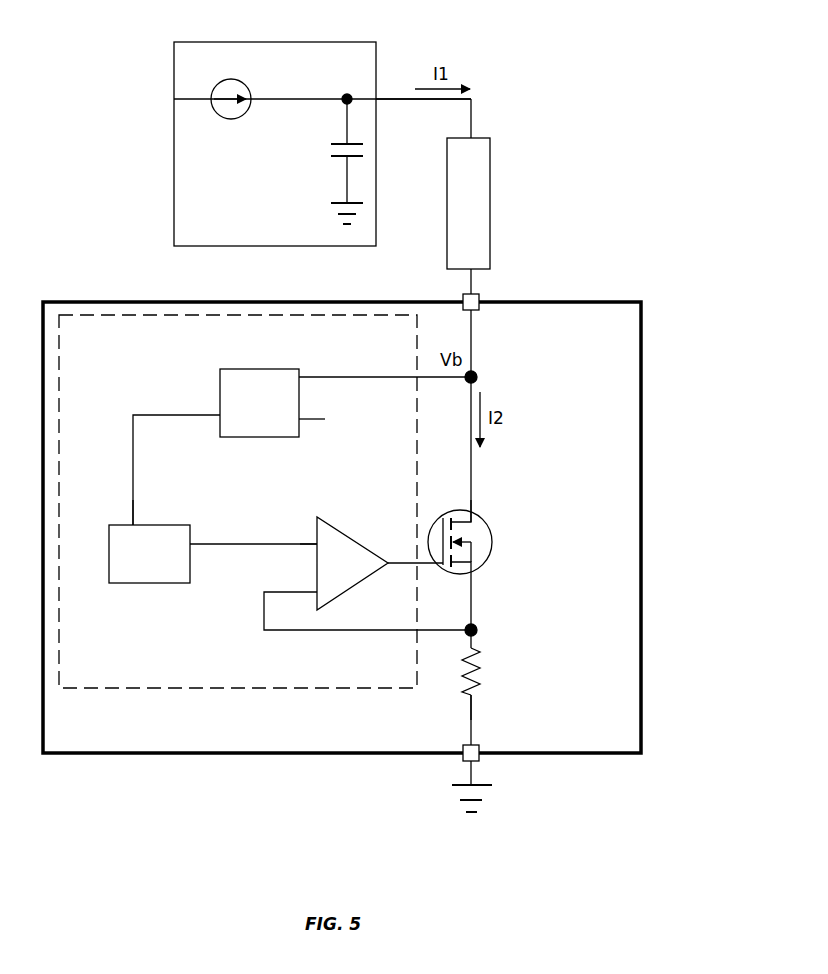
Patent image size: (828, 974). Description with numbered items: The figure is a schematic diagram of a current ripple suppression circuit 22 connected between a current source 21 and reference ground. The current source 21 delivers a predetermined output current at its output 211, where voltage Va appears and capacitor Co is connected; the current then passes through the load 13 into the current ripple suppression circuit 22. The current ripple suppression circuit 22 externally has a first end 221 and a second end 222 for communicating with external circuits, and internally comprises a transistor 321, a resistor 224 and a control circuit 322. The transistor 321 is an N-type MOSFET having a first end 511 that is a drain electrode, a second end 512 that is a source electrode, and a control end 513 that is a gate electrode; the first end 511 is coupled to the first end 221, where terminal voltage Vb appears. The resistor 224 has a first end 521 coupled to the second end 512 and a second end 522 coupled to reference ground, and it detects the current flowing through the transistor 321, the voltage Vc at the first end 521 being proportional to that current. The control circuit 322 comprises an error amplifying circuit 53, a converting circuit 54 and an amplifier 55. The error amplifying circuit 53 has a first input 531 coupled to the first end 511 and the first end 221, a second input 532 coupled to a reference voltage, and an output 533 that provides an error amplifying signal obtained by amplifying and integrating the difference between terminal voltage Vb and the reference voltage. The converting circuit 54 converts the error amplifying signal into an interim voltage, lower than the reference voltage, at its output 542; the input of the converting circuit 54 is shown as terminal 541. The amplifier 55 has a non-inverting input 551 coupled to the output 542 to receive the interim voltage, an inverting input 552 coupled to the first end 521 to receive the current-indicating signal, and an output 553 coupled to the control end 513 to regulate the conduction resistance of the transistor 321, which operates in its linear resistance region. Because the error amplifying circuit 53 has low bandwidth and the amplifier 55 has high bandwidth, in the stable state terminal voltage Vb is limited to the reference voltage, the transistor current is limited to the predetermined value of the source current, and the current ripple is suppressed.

The current source 21 is at (376, 42).
The output of current source 211 is at (378, 99).
The load 13 is at (490, 196).
The current ripple suppression circuit 22 is at (641, 357).
The first end of current ripple suppression circuit 221 is at (479, 302).
The second end of current ripple suppression circuit 222 is at (479, 761).
The resistor 224 is at (479, 660).
The control circuit 322 is at (238, 501).
The transistor 321 is at (484, 555).
The first end of transistor 511 is at (468, 517).
The second end of transistor 512 is at (470, 566).
The control end of transistor 513 is at (437, 563).
The first end of resistor 521 is at (478, 637).
The second end of resistor 522 is at (474, 695).
The error amplifying circuit 53 is at (220, 370).
The first input of error amplifying circuit 531 is at (299, 377).
The second input of error amplifying circuit 532 is at (299, 419).
The output of error amplifying circuit 533 is at (220, 415).
The converting circuit 54 is at (135, 583).
The input terminal of conversion unit 541 is at (133, 525).
The output of converting circuit 542 is at (190, 558).
The amplifier 55 is at (346, 536).
The non-inverting input of amplifier 551 is at (317, 543).
The inverting input of amplifier 552 is at (317, 592).
The output of amplifier 553 is at (401, 550).